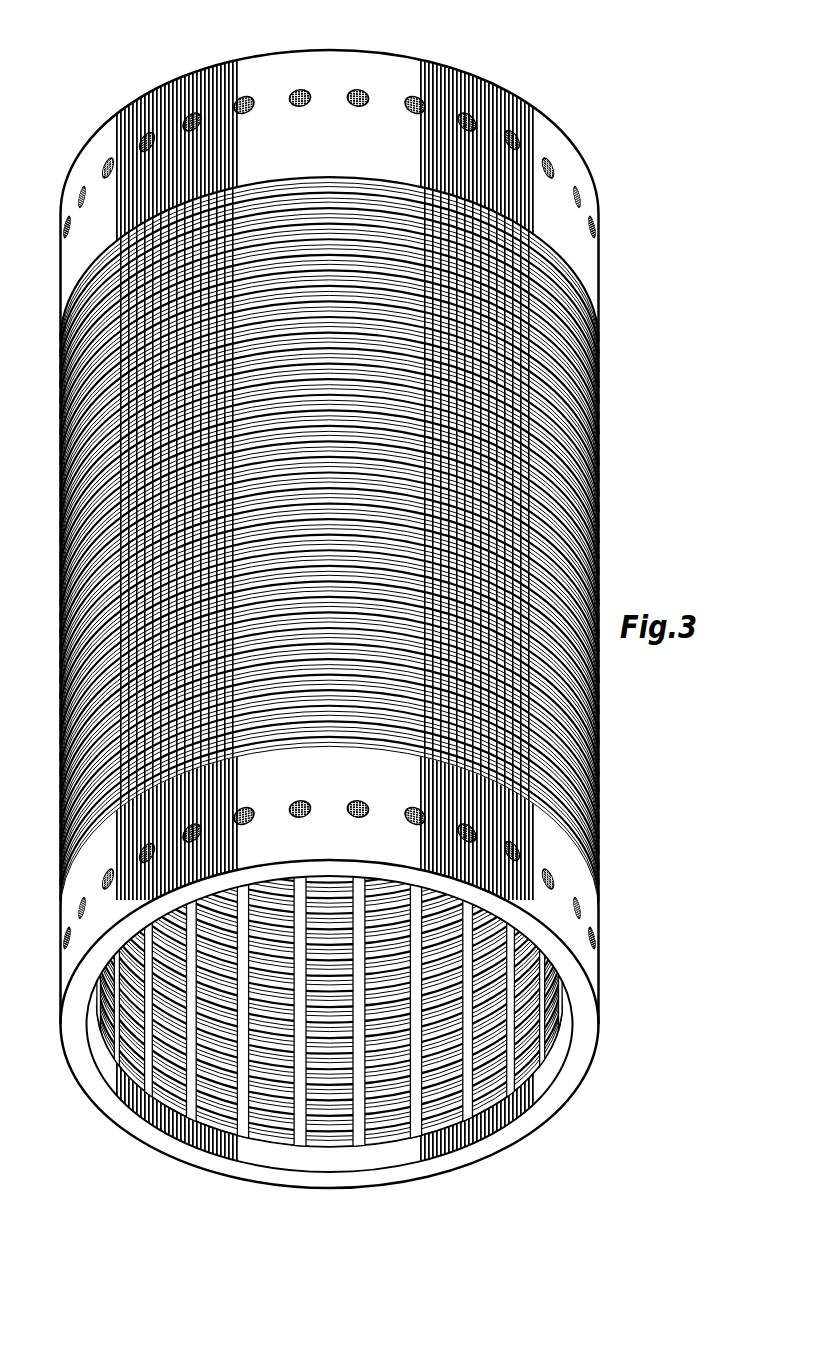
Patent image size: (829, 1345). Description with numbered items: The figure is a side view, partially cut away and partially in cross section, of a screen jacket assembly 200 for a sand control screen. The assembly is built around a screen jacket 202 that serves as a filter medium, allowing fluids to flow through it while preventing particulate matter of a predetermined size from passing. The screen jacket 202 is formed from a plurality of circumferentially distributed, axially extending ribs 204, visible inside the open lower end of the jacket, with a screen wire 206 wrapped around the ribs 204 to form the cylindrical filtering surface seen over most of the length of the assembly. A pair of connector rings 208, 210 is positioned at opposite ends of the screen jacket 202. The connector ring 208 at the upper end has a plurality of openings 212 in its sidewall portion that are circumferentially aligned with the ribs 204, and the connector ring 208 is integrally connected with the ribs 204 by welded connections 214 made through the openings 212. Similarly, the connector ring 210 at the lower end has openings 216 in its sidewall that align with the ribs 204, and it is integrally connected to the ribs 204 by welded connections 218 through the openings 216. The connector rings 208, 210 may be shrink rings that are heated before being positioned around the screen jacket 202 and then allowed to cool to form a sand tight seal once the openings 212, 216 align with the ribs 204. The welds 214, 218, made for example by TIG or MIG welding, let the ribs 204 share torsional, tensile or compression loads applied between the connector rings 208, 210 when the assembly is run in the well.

The screen jacket assembly 200 is at (626, 134).
The screen jacket 202 is at (604, 714).
The ribs 204 is at (493, 1113).
The screen wire 206 is at (552, 433).
The connector ring 208 is at (550, 130).
The connector ring 210 is at (573, 858).
The openings 212 is at (424, 104).
The welded connections 214 is at (420, 98).
The openings 216 is at (579, 898).
The welded connections 218 is at (584, 908).